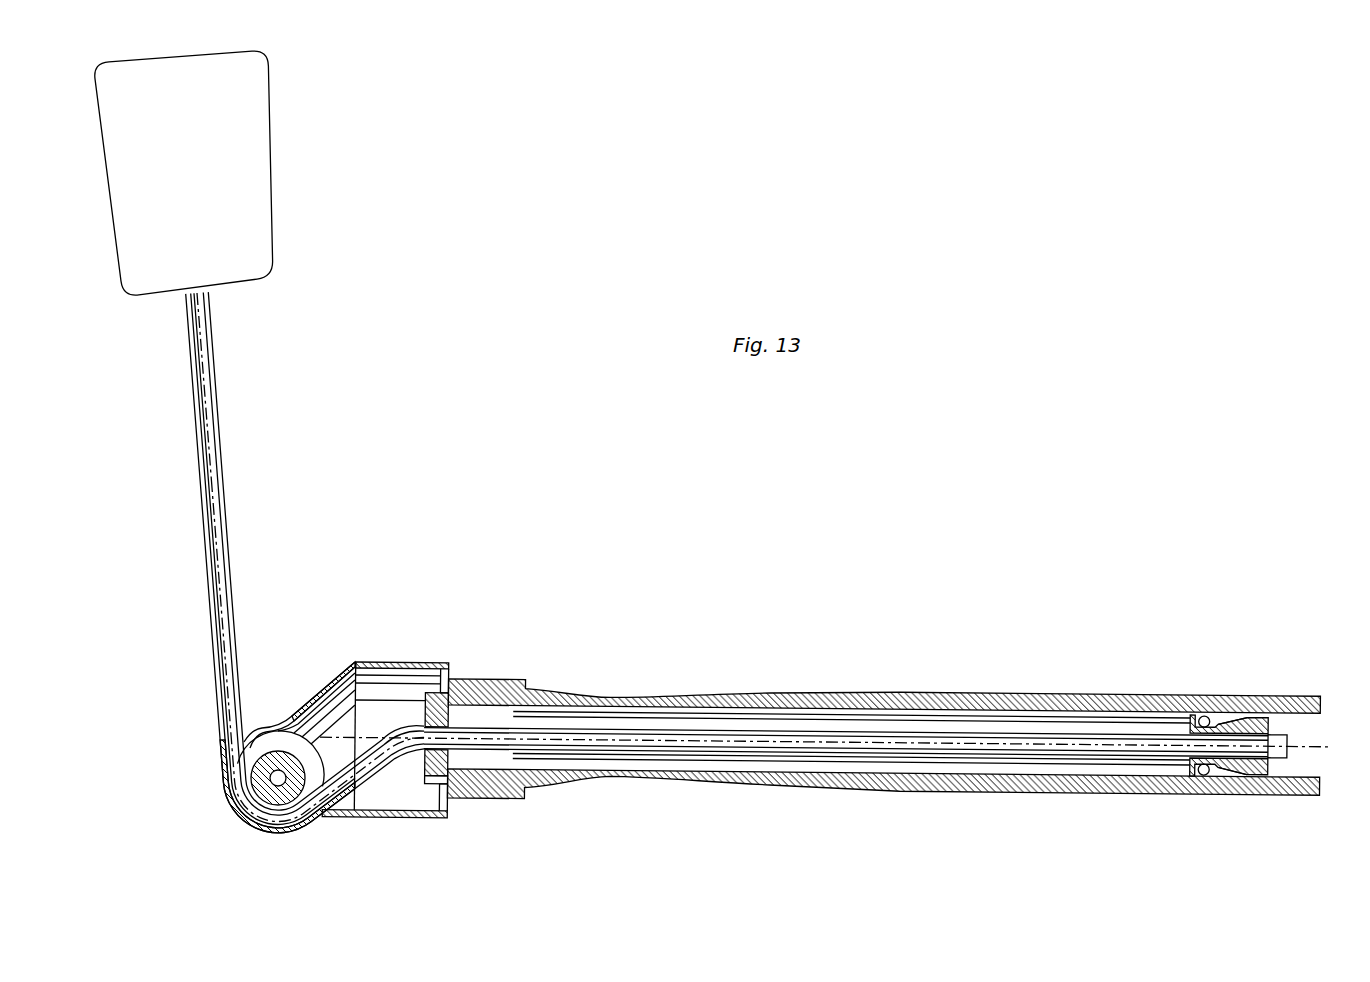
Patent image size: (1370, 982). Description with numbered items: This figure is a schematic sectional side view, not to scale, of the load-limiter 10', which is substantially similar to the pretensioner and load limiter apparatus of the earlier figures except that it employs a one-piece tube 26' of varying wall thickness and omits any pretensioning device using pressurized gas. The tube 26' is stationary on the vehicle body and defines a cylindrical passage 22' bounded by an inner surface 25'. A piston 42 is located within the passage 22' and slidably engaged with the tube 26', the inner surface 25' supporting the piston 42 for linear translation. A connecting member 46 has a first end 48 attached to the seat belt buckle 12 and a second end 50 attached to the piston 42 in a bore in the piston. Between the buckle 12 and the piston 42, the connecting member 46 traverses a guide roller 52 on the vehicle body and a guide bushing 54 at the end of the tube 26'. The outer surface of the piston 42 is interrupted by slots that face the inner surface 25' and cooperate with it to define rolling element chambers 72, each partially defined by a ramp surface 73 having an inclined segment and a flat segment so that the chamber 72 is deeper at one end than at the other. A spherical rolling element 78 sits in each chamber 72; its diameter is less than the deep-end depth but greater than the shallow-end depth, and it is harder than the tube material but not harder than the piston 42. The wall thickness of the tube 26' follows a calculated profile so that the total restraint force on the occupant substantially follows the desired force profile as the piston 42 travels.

The seat belt buckle 12 is at (247, 192).
The first end 48 is at (213, 380).
The connecting member 46 is at (236, 588).
The guide roller 52 is at (263, 742).
The guide bushing 54 is at (413, 767).
The one-piece tube 26' is at (884, 668).
The cylindrical passage 22' is at (883, 796).
The inner surface 25' is at (846, 782).
The load-limiter 10' is at (824, 693).
The rolling element chamber 72 is at (1218, 718).
The ramp surface 73 is at (1223, 720).
The second end 50 is at (1277, 740).
The spherical rolling element 78 is at (1202, 787).
The piston 42 is at (1258, 797).